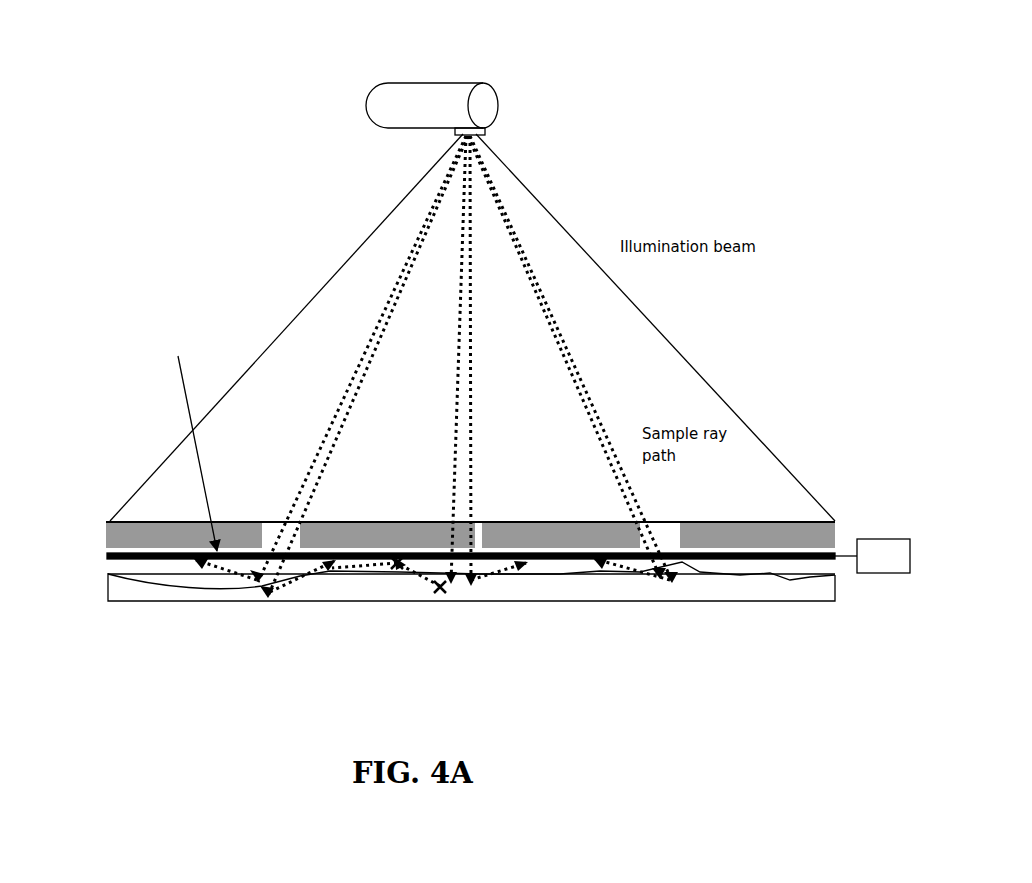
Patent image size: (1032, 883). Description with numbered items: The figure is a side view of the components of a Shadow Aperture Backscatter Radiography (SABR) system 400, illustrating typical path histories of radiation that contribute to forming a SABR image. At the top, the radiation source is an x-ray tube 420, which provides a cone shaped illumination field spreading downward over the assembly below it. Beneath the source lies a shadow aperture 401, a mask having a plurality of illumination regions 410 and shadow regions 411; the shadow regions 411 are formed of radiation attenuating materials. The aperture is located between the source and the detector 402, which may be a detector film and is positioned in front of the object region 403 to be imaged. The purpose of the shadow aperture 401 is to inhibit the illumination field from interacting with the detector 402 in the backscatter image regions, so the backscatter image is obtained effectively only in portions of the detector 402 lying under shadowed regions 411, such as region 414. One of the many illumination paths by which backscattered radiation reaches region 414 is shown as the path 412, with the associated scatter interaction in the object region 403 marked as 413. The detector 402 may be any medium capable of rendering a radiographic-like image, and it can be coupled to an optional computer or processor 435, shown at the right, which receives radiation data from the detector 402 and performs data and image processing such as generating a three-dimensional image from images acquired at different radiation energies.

The Shadow Aperture Backscatter Radiography (SABR) system 400 is at (679, 774).
The shadow aperture 401 is at (100, 515).
The detector 402 is at (104, 556).
The object region 403 is at (107, 587).
The illumination regions 410 is at (684, 518).
The shadow regions 411 is at (556, 517).
The illumination path 412 is at (548, 313).
The scatter interaction 413 is at (439, 592).
The shadowed detector region 414 is at (395, 566).
The x-ray tube 420 is at (421, 82).
The computer or processor 435 is at (888, 539).